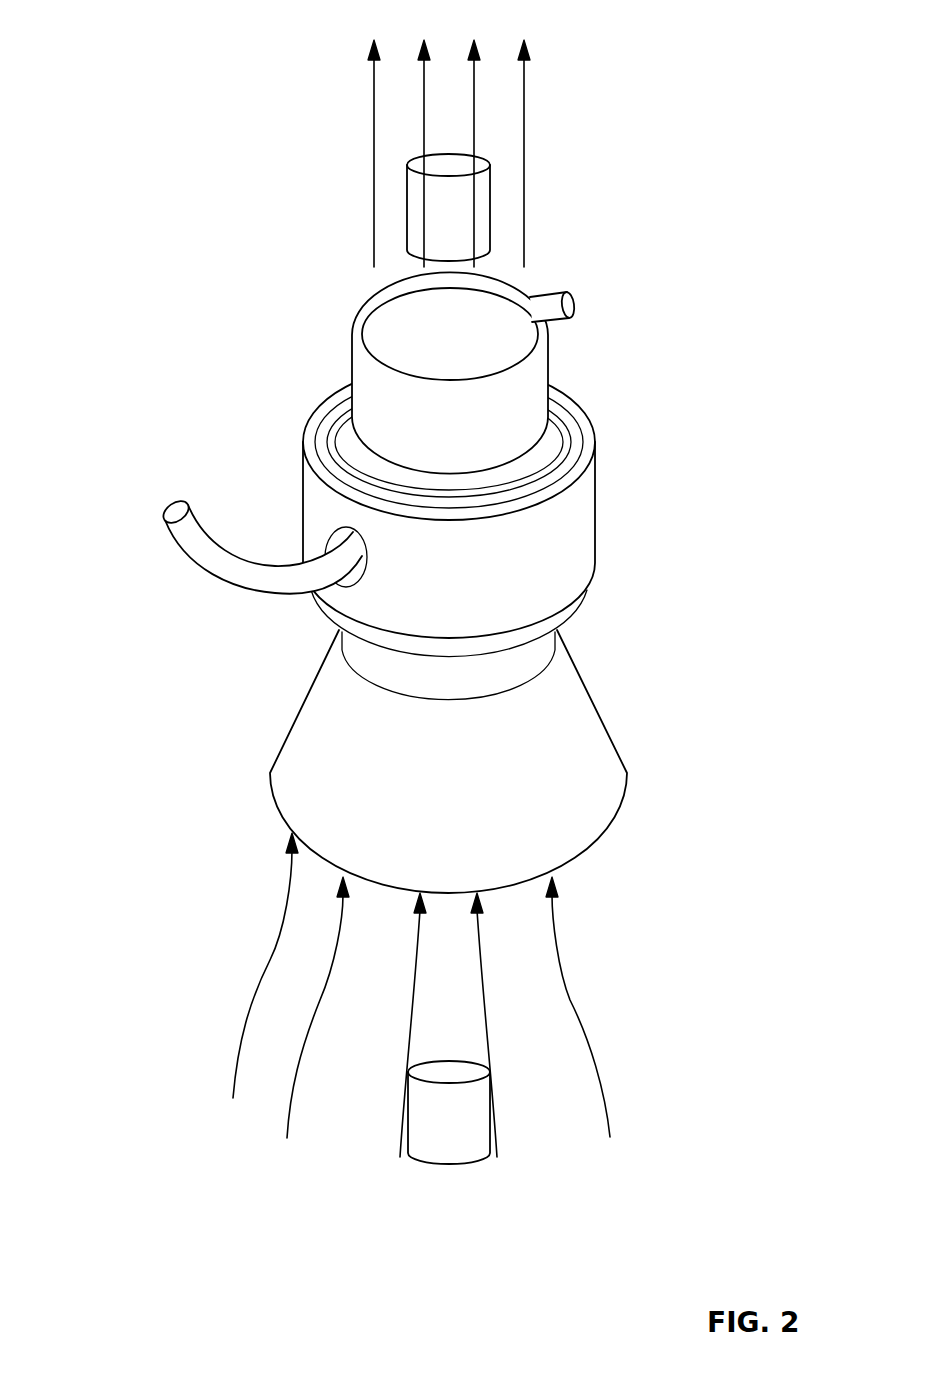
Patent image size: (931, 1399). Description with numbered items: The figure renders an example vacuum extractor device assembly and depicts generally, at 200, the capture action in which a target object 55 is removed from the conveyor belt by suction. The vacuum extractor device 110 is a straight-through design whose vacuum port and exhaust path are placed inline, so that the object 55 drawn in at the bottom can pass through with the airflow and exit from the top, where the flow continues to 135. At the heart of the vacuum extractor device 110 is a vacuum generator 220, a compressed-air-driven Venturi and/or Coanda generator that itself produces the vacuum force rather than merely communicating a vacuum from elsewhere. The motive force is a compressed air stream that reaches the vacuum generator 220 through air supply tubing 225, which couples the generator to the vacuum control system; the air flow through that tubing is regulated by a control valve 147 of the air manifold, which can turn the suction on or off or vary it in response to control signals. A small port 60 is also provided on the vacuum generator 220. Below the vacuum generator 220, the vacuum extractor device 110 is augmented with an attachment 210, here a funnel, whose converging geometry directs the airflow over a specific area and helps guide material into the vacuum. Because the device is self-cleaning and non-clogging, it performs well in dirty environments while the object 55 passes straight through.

The capture action 200 is at (122, 34).
The downstream component (gas outlet destination) 135 is at (449, 136).
The object 55 is at (405, 220).
The vacuum extractor device 110 is at (657, 268).
The vacuum generator 220 is at (322, 422).
The port 60 is at (574, 293).
The attachment 210 is at (282, 778).
The air supply tubing 225 is at (197, 567).
The control valve 147 is at (164, 488).